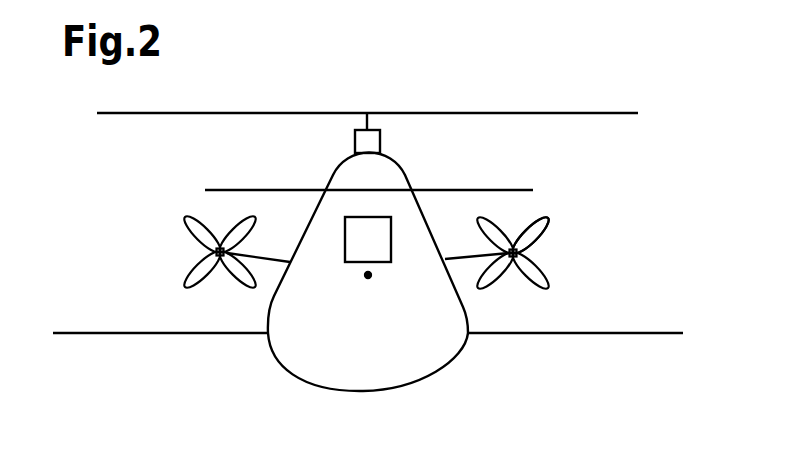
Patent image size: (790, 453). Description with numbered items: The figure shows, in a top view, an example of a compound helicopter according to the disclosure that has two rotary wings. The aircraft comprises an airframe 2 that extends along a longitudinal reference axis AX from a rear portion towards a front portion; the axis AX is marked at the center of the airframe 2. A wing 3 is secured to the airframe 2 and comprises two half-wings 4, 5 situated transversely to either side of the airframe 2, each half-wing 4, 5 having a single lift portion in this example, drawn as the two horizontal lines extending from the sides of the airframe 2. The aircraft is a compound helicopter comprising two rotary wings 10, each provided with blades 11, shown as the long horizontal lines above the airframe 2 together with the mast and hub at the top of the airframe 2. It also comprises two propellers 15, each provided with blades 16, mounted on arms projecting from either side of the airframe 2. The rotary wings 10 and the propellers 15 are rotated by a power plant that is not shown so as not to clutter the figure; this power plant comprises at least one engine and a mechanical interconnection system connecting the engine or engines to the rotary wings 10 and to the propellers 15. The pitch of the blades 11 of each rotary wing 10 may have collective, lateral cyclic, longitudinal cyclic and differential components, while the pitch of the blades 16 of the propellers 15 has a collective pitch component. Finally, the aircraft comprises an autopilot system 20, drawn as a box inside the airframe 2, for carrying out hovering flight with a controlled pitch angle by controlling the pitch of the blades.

The airframe 2 is at (427, 378).
The wing 3 is at (368, 372).
The half-wing 4 is at (165, 333).
The half-wing 5 is at (580, 334).
The rotary wing 10 is at (568, 98).
The blades 11 is at (638, 113).
The propeller 15 is at (179, 256).
The blades 16 is at (547, 219).
The autopilot system 20 is at (345, 221).
The longitudinal reference axis AX is at (368, 280).